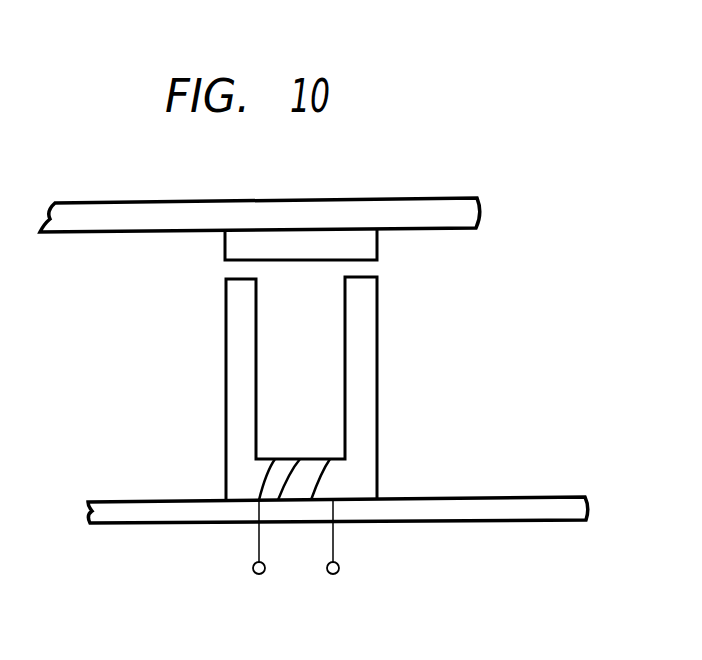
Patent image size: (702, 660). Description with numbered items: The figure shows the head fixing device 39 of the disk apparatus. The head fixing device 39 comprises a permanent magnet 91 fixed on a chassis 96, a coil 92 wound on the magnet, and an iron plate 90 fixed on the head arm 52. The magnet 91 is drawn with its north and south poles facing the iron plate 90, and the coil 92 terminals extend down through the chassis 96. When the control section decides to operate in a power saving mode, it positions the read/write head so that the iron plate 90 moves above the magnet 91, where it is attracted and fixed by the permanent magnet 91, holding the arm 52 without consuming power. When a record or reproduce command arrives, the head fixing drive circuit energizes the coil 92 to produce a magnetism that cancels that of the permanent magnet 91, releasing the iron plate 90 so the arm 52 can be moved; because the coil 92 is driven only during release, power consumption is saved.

The head arm 52 is at (437, 195).
The iron plate 90 is at (378, 251).
The permanent magnet 91 is at (379, 373).
The coil 92 is at (335, 541).
The chassis 96 is at (555, 495).
The head fixing device 39 is at (382, 401).